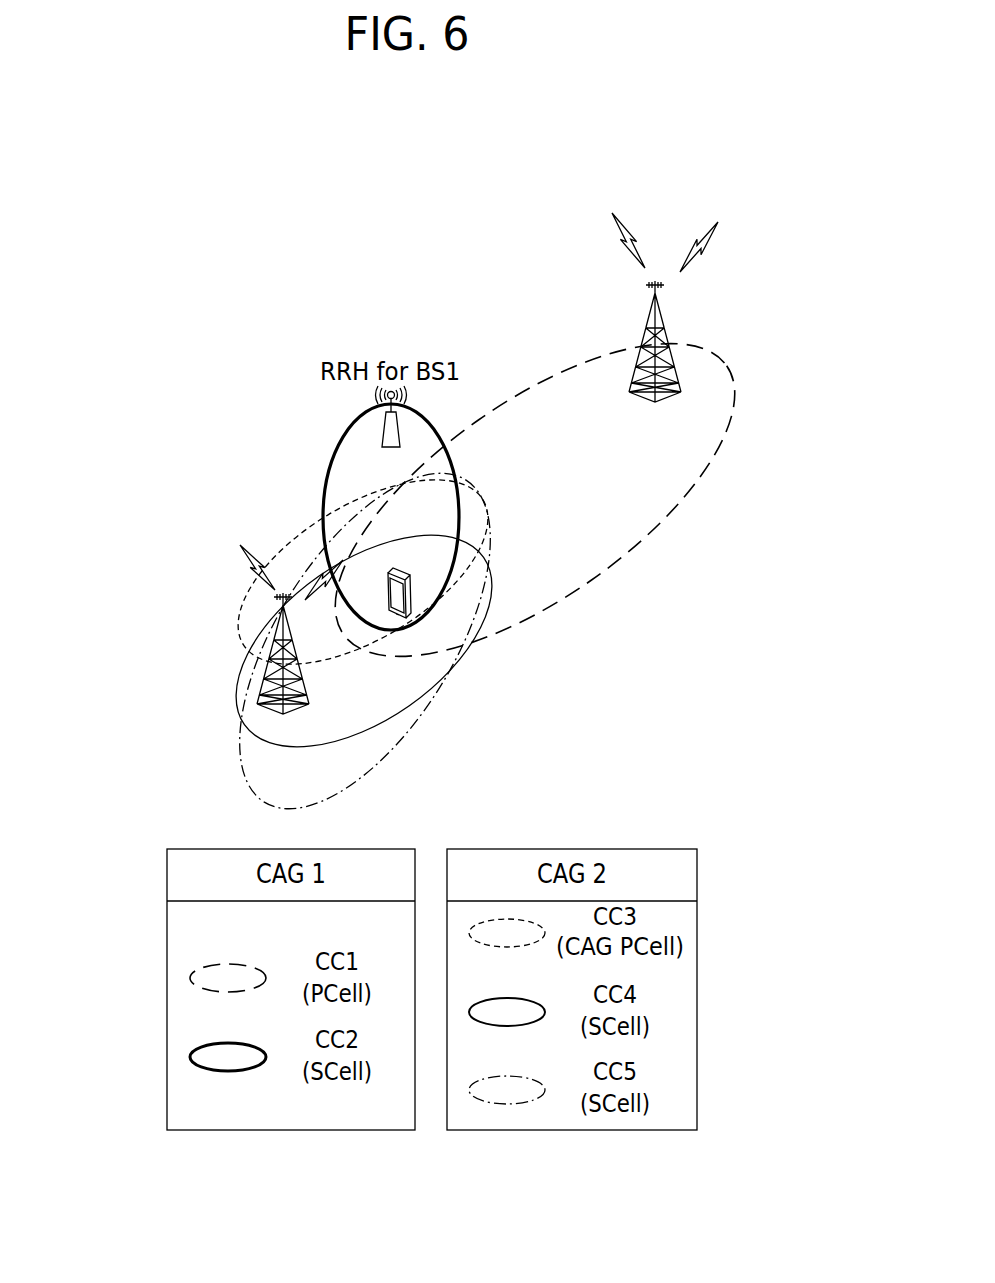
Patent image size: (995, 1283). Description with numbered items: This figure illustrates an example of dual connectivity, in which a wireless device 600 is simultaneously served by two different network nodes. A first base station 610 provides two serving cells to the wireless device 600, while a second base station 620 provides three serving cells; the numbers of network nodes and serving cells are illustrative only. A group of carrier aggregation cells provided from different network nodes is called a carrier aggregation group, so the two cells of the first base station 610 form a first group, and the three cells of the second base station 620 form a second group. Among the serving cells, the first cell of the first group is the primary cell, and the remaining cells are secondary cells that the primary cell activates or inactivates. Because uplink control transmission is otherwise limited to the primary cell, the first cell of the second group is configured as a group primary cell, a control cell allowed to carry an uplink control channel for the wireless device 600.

The wireless device 600 is at (414, 597).
The first base station 610 is at (663, 318).
The second base station 620 is at (276, 618).